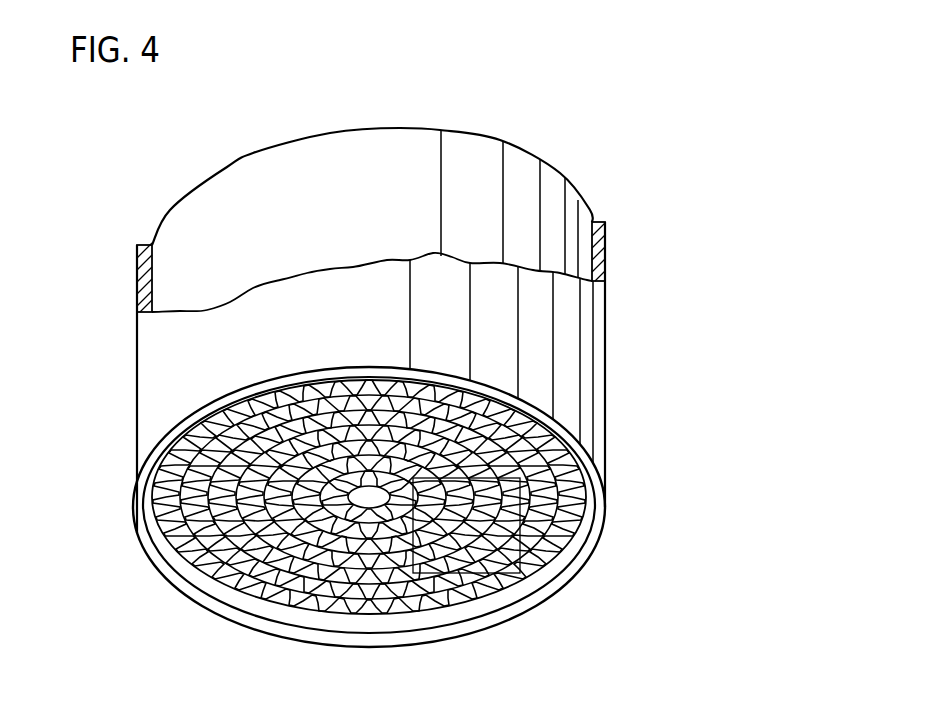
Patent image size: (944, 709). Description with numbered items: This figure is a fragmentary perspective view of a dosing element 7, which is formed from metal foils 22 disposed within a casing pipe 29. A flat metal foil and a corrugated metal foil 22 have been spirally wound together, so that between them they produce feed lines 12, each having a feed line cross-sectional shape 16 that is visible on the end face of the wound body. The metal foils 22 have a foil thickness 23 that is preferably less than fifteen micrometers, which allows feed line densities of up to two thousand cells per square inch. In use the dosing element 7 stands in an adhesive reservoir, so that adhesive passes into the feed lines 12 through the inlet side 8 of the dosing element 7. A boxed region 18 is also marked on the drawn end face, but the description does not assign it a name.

The dosing element 7 is at (523, 160).
The casing pipe 29 is at (605, 252).
The inlet side 8 is at (575, 468).
The feed lines 12 is at (558, 527).
The feed line cross-sectional shape 16 is at (320, 602).
The segment of honeycomb body 18 is at (533, 572).
The metal foils 22 is at (160, 470).
The foil thickness 23 is at (183, 590).